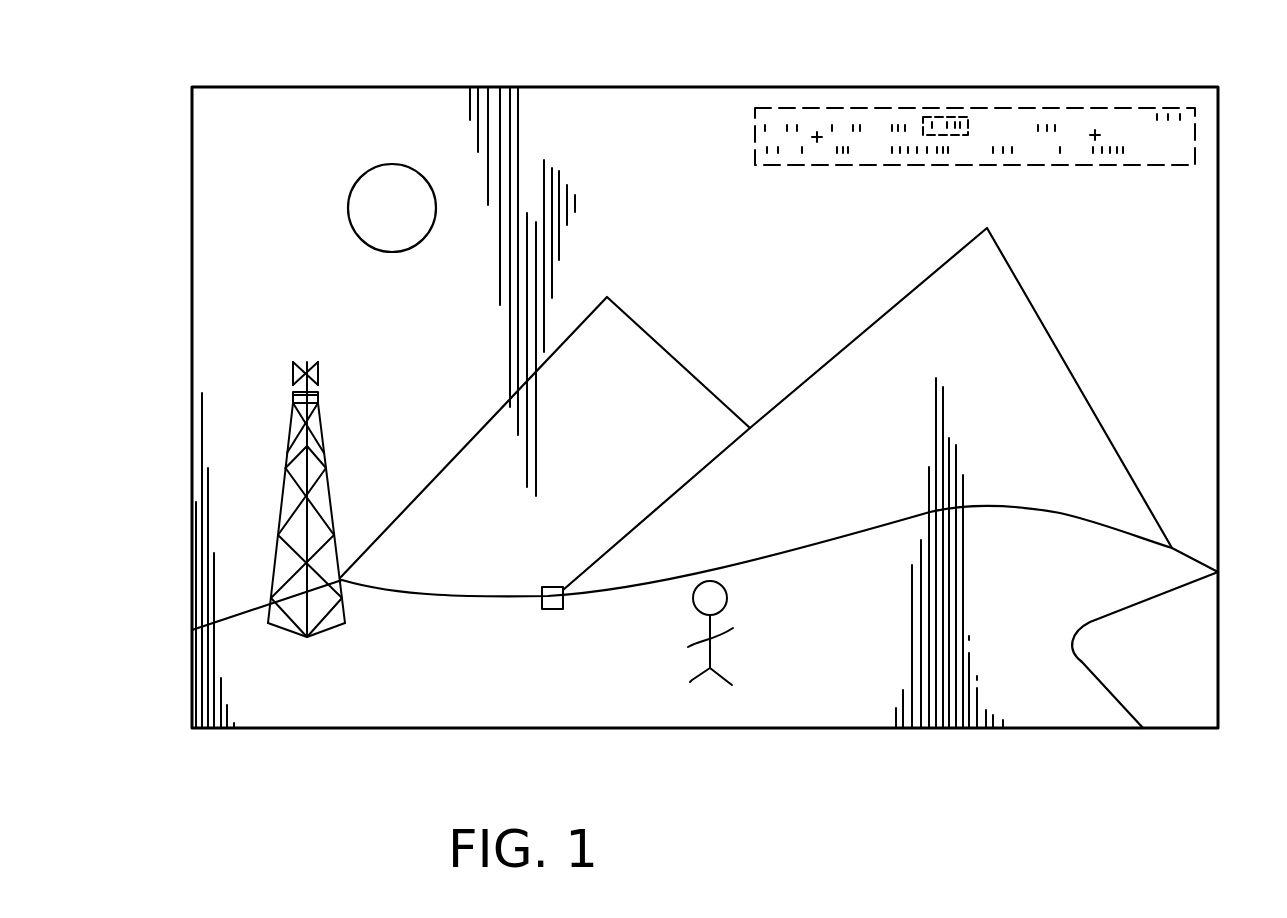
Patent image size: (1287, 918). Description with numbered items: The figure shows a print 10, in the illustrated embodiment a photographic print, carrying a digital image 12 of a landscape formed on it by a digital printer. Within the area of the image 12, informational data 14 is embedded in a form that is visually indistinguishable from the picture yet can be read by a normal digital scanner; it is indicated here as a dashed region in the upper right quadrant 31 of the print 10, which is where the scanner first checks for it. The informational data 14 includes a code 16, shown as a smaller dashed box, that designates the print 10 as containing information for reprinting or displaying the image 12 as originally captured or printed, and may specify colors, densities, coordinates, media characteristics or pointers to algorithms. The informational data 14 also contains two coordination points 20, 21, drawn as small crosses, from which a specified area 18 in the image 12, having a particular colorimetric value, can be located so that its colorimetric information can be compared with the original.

The print 10 is at (739, 420).
The digital image 12 is at (765, 705).
The informational data 14 is at (883, 107).
The code 16 is at (970, 127).
The specified area 18 is at (548, 609).
The coordination point 20 is at (817, 133).
The coordination point 21 is at (1096, 131).
The upper right quadrant 31 is at (1185, 108).